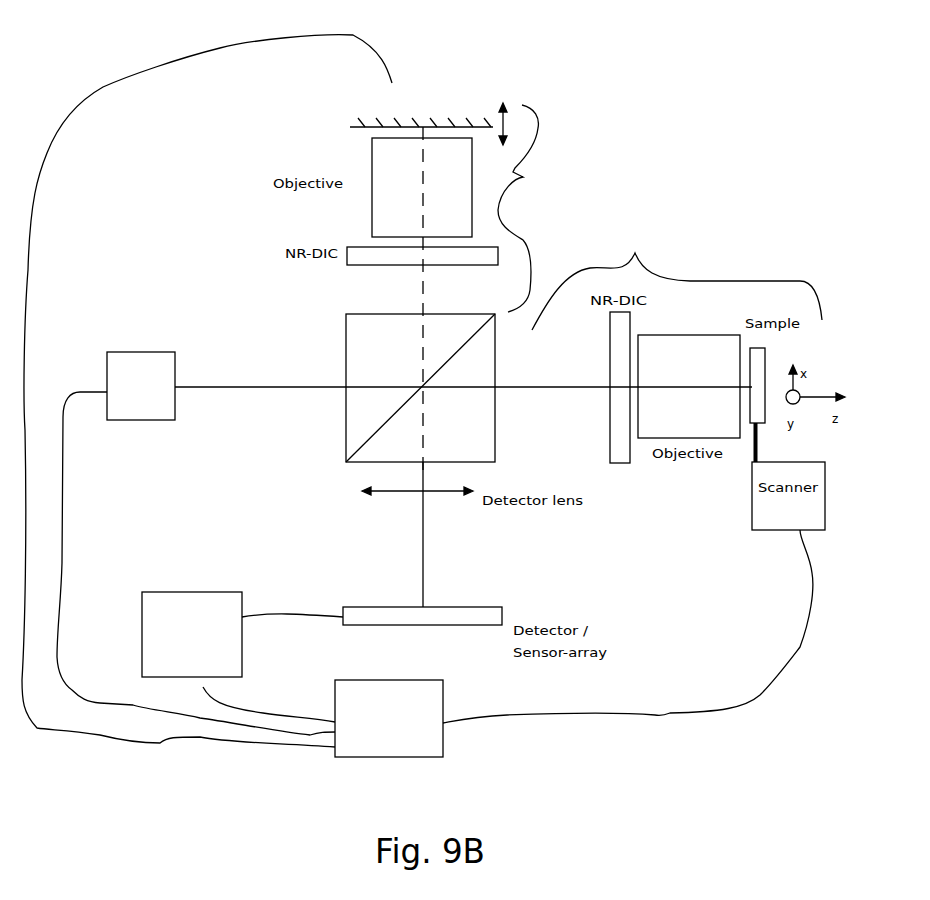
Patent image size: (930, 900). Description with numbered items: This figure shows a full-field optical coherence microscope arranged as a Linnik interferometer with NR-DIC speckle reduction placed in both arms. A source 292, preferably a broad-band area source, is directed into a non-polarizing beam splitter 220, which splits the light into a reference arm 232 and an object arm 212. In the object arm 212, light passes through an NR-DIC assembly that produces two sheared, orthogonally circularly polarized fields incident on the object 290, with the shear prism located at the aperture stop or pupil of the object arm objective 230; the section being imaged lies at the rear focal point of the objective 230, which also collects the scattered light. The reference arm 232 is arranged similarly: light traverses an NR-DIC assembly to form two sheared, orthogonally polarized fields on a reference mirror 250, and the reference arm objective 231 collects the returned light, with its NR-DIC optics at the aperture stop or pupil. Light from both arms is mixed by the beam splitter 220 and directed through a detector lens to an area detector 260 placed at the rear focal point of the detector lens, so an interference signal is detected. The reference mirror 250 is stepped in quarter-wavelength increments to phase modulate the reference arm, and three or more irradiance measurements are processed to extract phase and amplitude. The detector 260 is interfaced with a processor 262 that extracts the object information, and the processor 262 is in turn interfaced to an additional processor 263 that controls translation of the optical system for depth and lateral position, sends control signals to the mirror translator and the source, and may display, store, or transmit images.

The reference mirror 250 is at (350, 125).
The reference arm objective 231 is at (422, 187).
The reference arm 232 is at (453, 208).
The non-polarizing beam splitter 220 is at (345, 395).
The source 292 is at (138, 352).
The object arm 212 is at (677, 278).
The object arm objective 230 is at (689, 386).
The object 290 is at (767, 393).
The area detector 260 is at (487, 607).
The processor 262 is at (192, 634).
The processor 263 is at (389, 718).